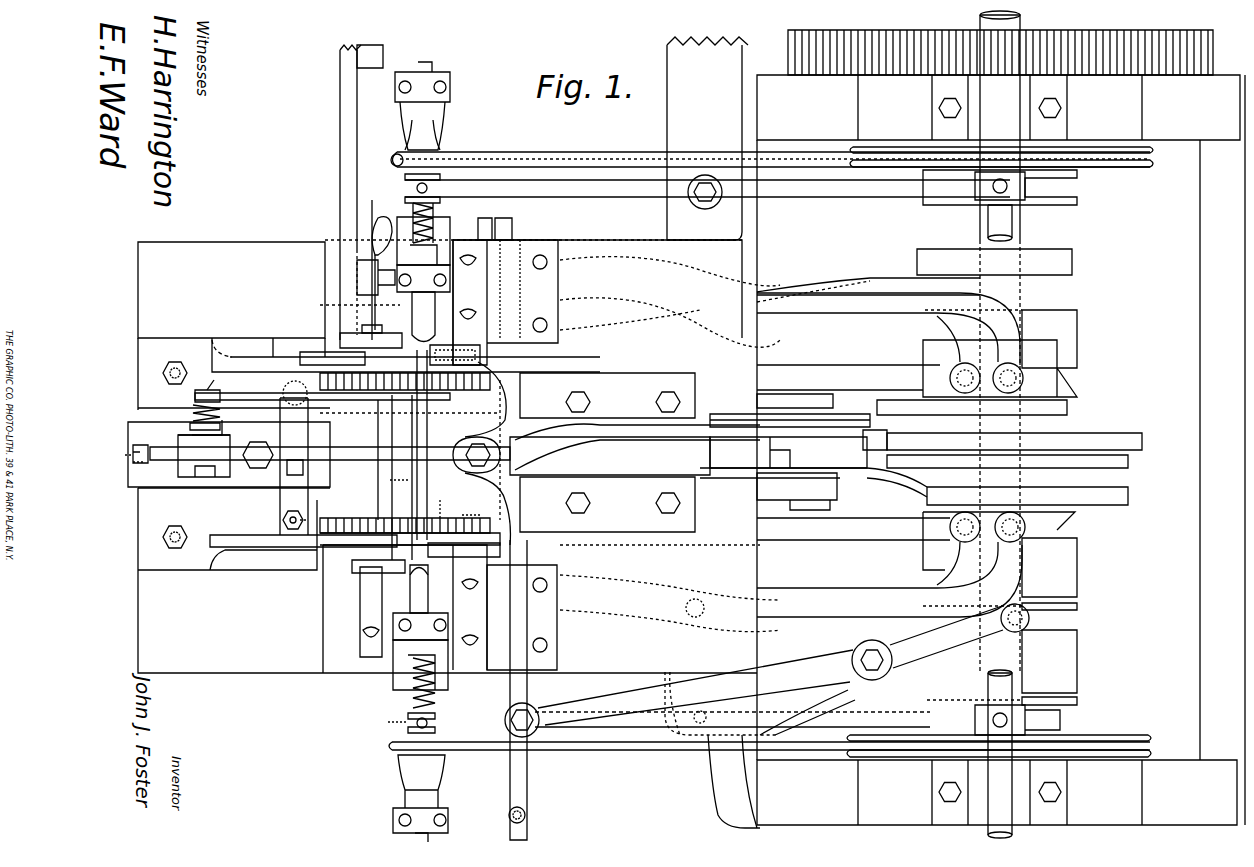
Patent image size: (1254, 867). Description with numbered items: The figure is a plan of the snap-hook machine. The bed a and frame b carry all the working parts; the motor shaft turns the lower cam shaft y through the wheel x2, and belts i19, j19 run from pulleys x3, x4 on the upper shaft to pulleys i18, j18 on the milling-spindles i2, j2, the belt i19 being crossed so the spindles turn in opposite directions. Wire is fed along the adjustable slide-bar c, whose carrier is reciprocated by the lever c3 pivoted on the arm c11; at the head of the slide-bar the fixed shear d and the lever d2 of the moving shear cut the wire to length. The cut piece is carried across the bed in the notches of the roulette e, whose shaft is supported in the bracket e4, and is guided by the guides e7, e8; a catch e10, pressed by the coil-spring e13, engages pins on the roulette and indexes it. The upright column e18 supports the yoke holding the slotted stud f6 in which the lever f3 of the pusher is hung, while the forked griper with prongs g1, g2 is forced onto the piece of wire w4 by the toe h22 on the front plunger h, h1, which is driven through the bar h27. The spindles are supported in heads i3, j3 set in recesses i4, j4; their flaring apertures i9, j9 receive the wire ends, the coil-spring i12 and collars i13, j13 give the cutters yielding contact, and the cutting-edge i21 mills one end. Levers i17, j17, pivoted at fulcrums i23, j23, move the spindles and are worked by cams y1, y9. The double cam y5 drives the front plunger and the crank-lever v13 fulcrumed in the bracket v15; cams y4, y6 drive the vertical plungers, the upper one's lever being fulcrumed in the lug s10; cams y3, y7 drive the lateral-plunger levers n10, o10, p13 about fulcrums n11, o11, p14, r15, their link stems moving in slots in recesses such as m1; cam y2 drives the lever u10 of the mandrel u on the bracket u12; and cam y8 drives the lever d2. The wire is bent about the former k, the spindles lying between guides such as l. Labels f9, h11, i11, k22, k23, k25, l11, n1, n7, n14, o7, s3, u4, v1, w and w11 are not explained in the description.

The bed a is at (447, 456).
The frame b is at (1001, 450).
The slide-bar c is at (356, 192).
The arm c11 is at (707, 138).
The lever of the carrier c3 is at (373, 54).
The fixed shear d is at (351, 349).
The lever of the moving shear d2 is at (868, 282).
The roulette e is at (355, 471).
The bracket e4 is at (406, 355).
The guide e7 is at (410, 408).
The guide e8 is at (400, 487).
The catch e10 is at (322, 390).
The coil-spring e13 is at (199, 407).
The upright column e18 is at (341, 395).
The lever of the pusher f3 is at (321, 455).
The slotted stud f6 is at (294, 466).
The nut f9 is at (289, 512).
The prong of the griper g1 is at (430, 445).
The prong of the griper g2 is at (438, 504).
The front plunger h is at (234, 466).
The back part of the front plunger h1 is at (235, 454).
The slide block h11 is at (199, 433).
The inclined toe h22 is at (116, 455).
The bar h27 is at (790, 415).
The milling-spindle i2 is at (423, 241).
The head of the milling-spindle i3 is at (422, 177).
The recess i4 is at (362, 276).
The aperture i9 is at (423, 317).
The spring i11 is at (431, 223).
The coil-spring i12 is at (383, 273).
The loose collar i13 is at (411, 188).
The lever i17 is at (707, 187).
The pulley i18 is at (422, 126).
The belt i19 is at (772, 150).
The cutting-edge i21 is at (381, 321).
The fulcrum i23 is at (712, 192).
The milling-spindle j2 is at (420, 674).
The head of the milling-spindle j3 is at (420, 727).
The recess j4 is at (366, 601).
The aperture j9 is at (419, 589).
The loose collar j13 is at (398, 723).
The lever j17 is at (694, 710).
The pulley j18 is at (421, 781).
The belt j19 is at (769, 755).
The fulcrum j23 is at (721, 750).
The former k is at (472, 461).
The block k22 is at (607, 395).
The block k23 is at (607, 504).
The block k25 is at (875, 440).
The guide l is at (382, 477).
The rod l'' l11 is at (477, 507).
The recess m1 is at (514, 445).
The block n' n1 is at (494, 225).
The fulcrum n11 is at (670, 312).
The block n7 is at (505, 302).
The lever n10 is at (917, 368).
The link n14 is at (630, 329).
The block o7 is at (492, 613).
The lever o10 is at (916, 541).
The fulcrum o11 is at (660, 540).
The lever p13 is at (888, 329).
The fulcrum p14 is at (889, 579).
The fulcrum r15 is at (670, 603).
The pin s3 is at (148, 459).
The upright lug s10 is at (635, 449).
The mandrel u is at (526, 690).
The hub u4 is at (499, 453).
The lever of the mandrel u10 is at (770, 665).
The bracket u12 is at (807, 712).
The bar v' v1 is at (788, 452).
The crank-lever v13 is at (813, 476).
The bracket v15 is at (798, 484).
The pivot w is at (387, 158).
The nut w'' w11 is at (872, 660).
The piece of wire w4 is at (455, 348).
The wheel x2 is at (1000, 43).
The pulley x3 is at (1009, 157).
The pulley x4 is at (999, 737).
The shaft y is at (1006, 424).
The cam y1 is at (1017, 720).
The cam y2 is at (1002, 654).
The cam y3 is at (1000, 574).
The cam y4 is at (1027, 496).
The double cam y5 is at (1014, 450).
The cam y6 is at (972, 407).
The cam y7 is at (1001, 339).
The cam y8 is at (994, 262).
The cam y9 is at (1000, 187).